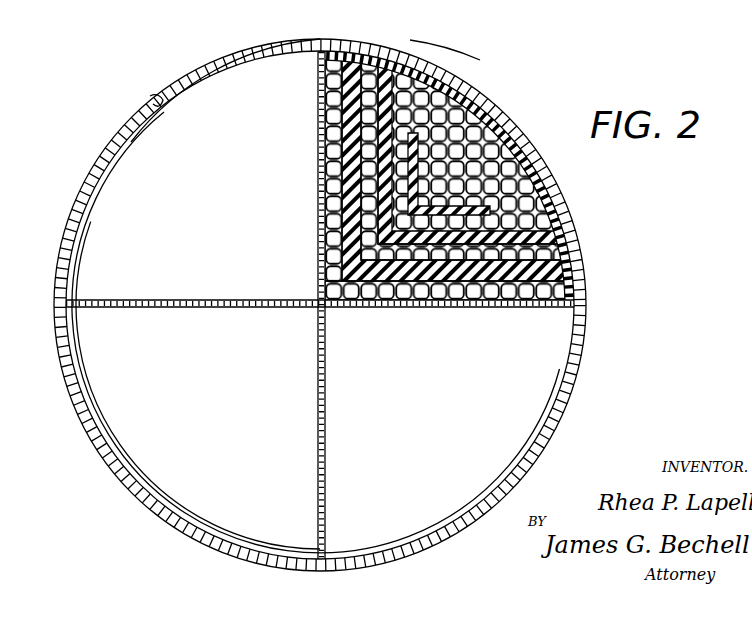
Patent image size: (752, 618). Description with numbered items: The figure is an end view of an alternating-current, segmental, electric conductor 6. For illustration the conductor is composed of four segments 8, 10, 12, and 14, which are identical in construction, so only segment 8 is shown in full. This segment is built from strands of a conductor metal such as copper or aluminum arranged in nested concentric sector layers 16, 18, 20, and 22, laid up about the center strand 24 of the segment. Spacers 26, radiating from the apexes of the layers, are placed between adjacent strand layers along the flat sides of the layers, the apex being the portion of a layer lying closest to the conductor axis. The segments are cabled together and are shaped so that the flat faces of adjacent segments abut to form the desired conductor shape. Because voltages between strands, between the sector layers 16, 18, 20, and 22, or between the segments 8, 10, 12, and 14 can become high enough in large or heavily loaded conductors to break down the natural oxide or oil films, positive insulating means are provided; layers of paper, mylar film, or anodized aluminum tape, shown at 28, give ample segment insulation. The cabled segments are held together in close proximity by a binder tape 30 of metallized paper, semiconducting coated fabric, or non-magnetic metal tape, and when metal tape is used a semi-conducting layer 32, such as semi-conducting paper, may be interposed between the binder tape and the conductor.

The segmental electric conductor 6 is at (447, 58).
The conductor segment 8 is at (340, 47).
The conductor segment 10 is at (557, 333).
The conductor segment 12 is at (110, 400).
The conductor segment 14 is at (130, 142).
The sector layer 16 is at (335, 130).
The sector layer 18 is at (363, 173).
The sector layer 20 is at (405, 187).
The sector layer 22 is at (395, 212).
The center strand 24 is at (412, 205).
The spacers 26 is at (443, 290).
The segment insulation 28 is at (322, 98).
The binder tape 30 is at (190, 70).
The semi-conducting layer 32 is at (150, 97).